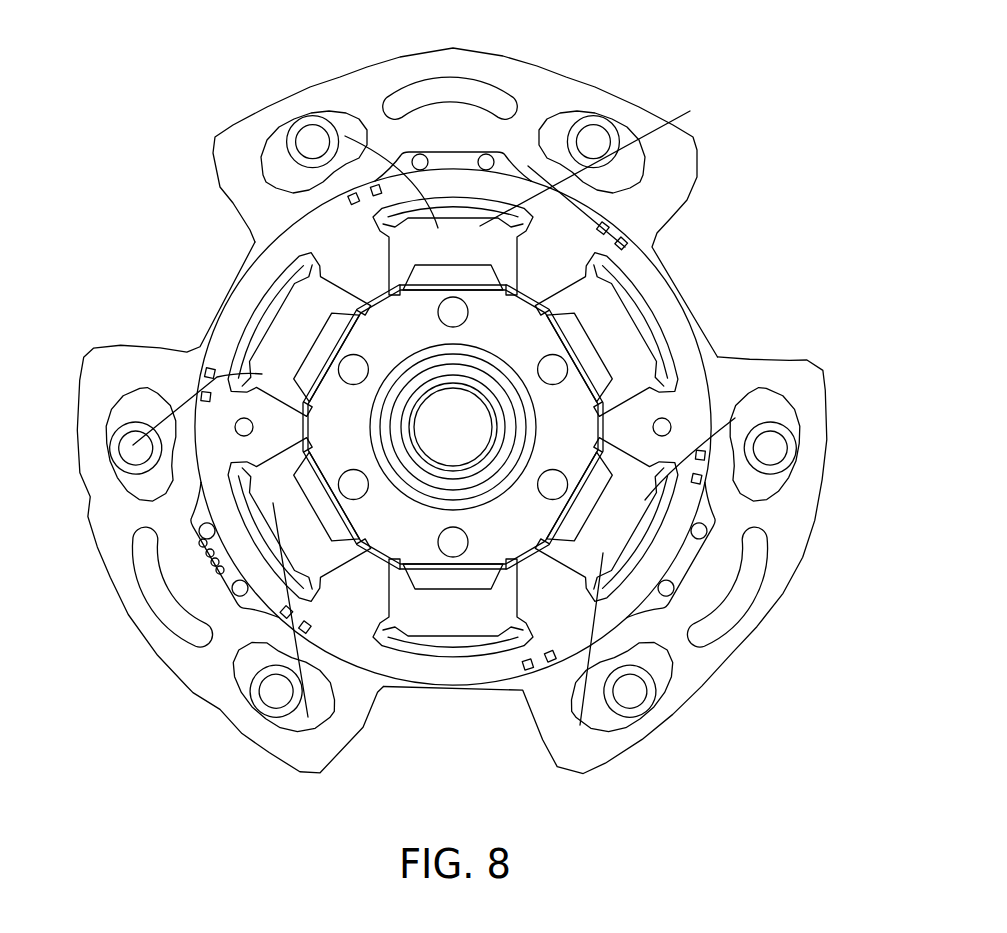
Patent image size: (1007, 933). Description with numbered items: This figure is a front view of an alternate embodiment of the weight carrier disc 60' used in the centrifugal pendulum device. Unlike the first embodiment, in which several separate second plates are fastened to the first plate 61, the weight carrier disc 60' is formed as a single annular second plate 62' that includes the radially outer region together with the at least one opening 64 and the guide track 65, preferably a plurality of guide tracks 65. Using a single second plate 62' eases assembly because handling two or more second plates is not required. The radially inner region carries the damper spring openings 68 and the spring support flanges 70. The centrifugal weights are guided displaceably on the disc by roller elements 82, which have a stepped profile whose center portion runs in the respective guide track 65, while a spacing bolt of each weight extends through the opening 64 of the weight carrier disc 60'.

The weight carrier disc 60' is at (786, 85).
The first plate 61 is at (643, 277).
The second plate 62' is at (445, 430).
The opening 64 is at (460, 88).
The guide track 65 is at (434, 418).
The damper spring opening 68 is at (258, 248).
The spring support flange 70 is at (312, 292).
The roller element 82 is at (312, 140).